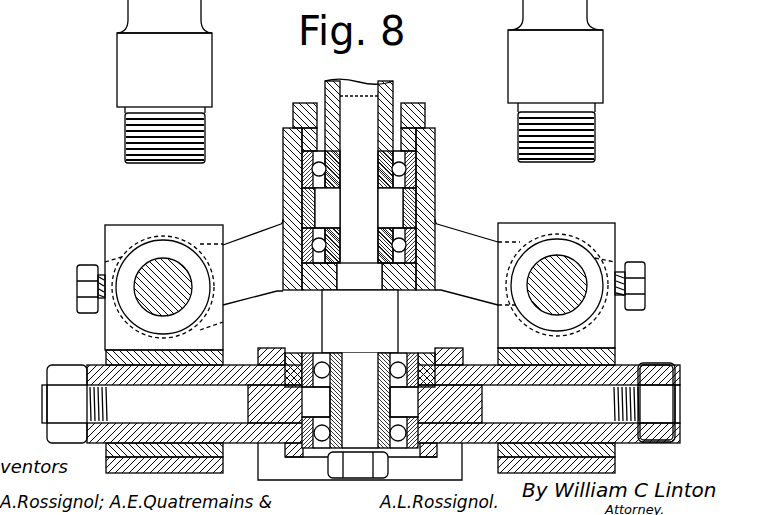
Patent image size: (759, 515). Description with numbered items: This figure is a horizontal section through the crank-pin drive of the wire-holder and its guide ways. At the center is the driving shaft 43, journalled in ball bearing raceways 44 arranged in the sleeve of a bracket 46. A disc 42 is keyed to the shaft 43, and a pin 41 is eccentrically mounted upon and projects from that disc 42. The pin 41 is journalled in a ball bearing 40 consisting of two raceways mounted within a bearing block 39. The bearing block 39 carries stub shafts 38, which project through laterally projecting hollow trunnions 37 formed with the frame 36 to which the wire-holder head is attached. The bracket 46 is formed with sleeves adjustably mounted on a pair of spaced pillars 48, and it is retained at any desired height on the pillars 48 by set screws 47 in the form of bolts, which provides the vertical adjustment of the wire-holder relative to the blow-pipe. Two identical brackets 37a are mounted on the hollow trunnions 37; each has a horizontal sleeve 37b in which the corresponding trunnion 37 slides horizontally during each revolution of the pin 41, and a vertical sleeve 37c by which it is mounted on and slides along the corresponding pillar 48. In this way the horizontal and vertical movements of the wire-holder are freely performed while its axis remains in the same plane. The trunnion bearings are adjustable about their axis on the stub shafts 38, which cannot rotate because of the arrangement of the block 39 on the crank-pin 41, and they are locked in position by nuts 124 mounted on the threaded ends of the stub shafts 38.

The frame 36 is at (265, 350).
The hollow trunnion 37 is at (487, 435).
The bracket 37a is at (638, 332).
The horizontal sleeve 37b is at (135, 450).
The vertical sleeve 37c is at (603, 215).
The stub shaft 38 is at (603, 415).
The bearing block 39 is at (293, 362).
The ball bearing 40 is at (310, 446).
The pin 41 is at (367, 362).
The disc 42 is at (392, 307).
The shaft 43 is at (368, 107).
The ball bearing raceways 44 is at (411, 177).
The bracket 46 is at (255, 243).
The set screw 47 is at (88, 270).
The pillar 48 is at (521, 62).
The nut 124 is at (657, 435).